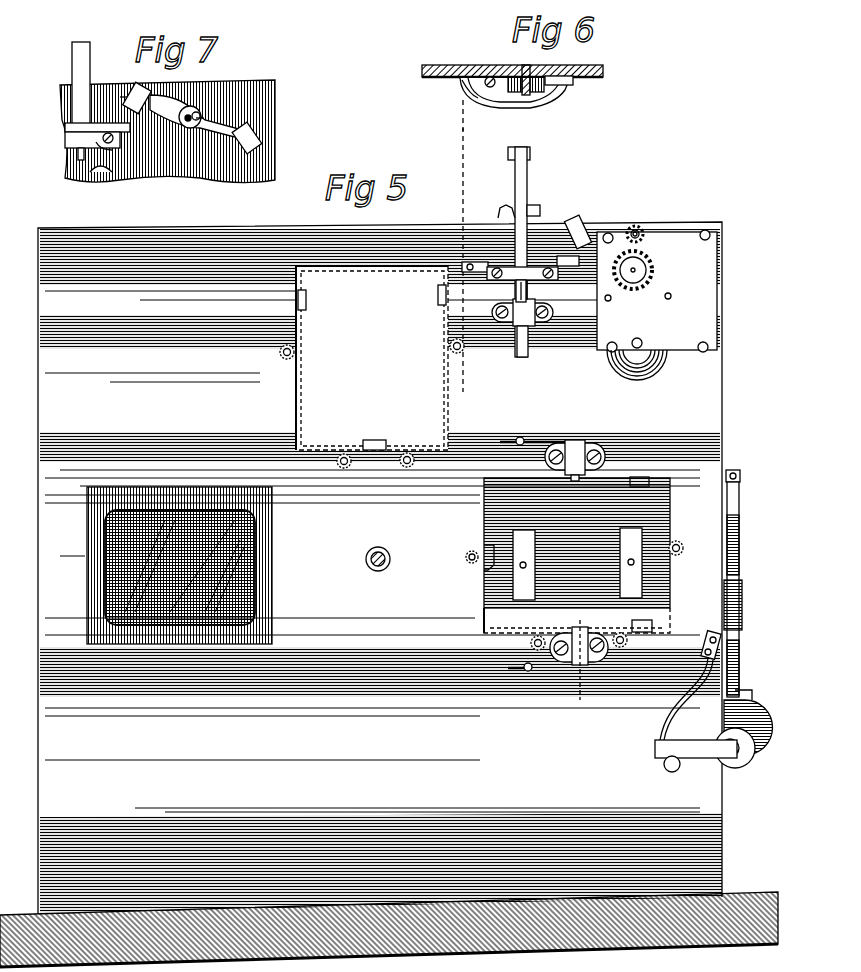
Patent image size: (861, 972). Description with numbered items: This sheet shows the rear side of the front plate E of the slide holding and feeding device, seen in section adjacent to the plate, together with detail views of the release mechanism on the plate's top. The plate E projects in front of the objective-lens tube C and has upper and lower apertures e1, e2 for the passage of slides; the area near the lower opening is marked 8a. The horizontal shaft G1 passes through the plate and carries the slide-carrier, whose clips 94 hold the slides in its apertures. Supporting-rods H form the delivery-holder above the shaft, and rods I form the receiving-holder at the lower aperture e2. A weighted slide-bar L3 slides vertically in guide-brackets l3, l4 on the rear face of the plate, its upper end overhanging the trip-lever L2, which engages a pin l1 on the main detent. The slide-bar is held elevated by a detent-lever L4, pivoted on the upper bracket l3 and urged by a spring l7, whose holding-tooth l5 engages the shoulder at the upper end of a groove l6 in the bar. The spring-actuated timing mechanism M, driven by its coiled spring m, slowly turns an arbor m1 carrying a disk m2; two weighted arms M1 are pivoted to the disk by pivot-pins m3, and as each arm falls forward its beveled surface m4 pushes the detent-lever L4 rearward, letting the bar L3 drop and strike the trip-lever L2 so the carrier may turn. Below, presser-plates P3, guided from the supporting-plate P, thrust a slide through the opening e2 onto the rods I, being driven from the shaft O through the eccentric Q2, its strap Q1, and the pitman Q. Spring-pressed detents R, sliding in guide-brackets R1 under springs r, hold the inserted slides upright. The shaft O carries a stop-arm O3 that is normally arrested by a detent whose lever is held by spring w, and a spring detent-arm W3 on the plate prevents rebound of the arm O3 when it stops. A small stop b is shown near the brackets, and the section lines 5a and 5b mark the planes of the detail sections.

In FIG. 5, the front plate E is at (380, 568).
In FIG. 6, the front plate E is at (605, 66).
In FIG. 7, the front plate E is at (158, 165).
In FIG. 5, the objective-lens tube C is at (272, 575).
In FIG. 5, the plate 8a is at (240, 540).
In FIG. 5, the upper aperture e1 is at (449, 422).
In FIG. 5, the lower aperture e2 is at (484, 514).
In FIG. 5, the clips 94 is at (436, 295).
In FIG. 5, the supporting-rods H is at (280, 358).
In FIG. 5, the spring-actuated timing mechanism M is at (657, 289).
In FIG. 5, the coiled actuating-spring m is at (655, 360).
In FIG. 7, the arbor m1 is at (200, 118).
In FIG. 5, the disk m2 is at (640, 230).
In FIG. 7, the disk m2 is at (200, 114).
In FIG. 7, the pivot-pins m3 is at (185, 124).
In FIG. 5, the beveled surfaces m4 is at (580, 222).
In FIG. 7, the beveled surfaces m4 is at (298, 124).
In FIG. 7, the weighted arms M1 is at (160, 88).
In FIG. 5, the stop b is at (575, 254).
In FIG. 5, the trip-lever L2 is at (505, 212).
In FIG. 5, the weighted slide-bar L3 is at (524, 178).
In FIG. 6, the weighted slide-bar L3 is at (524, 68).
In FIG. 7, the weighted slide-bar L3 is at (87, 42).
In FIG. 6, the detent-lever L4 is at (535, 96).
In FIG. 7, the detent-lever L4 is at (70, 140).
In FIG. 5, the pin l1 is at (472, 266).
In FIG. 5, the upper guide-bracket l3 is at (538, 282).
In FIG. 6, the upper guide-bracket l3 is at (526, 96).
In FIG. 7, the upper guide-bracket l3 is at (122, 140).
In FIG. 5, the lower guide-bracket l4 is at (545, 266).
In FIG. 7, the lower guide-bracket l4 is at (104, 172).
In FIG. 6, the holding-tooth l5 is at (532, 70).
In FIG. 5, the groove l6 is at (514, 288).
In FIG. 7, the groove l6 is at (78, 150).
In FIG. 6, the spring l7 is at (468, 95).
In FIG. 5, the section line 5a is at (477, 251).
In FIG. 6, the section line 5a is at (475, 121).
In FIG. 5, the section line 5b is at (593, 659).
In FIG. 5, the horizontal shaft G1 is at (392, 553).
In FIG. 5, the supporting-rods I is at (466, 563).
In FIG. 5, the supporting-plate P is at (579, 545).
In FIG. 5, the presser-plates P3 is at (524, 545).
In FIG. 5, the spring r is at (556, 441).
In FIG. 5, the spring-pressed detents R is at (578, 445).
In FIG. 5, the guide-bracket R1 is at (582, 462).
In FIG. 5, the pitman Q is at (741, 590).
In FIG. 5, the strap Q1 is at (752, 690).
In FIG. 5, the eccentric Q2 is at (748, 727).
In FIG. 5, the shaft O is at (743, 756).
In FIG. 5, the stop-arm O3 is at (686, 745).
In FIG. 5, the spring w is at (670, 772).
In FIG. 5, the spring detent-arm W3 is at (664, 708).